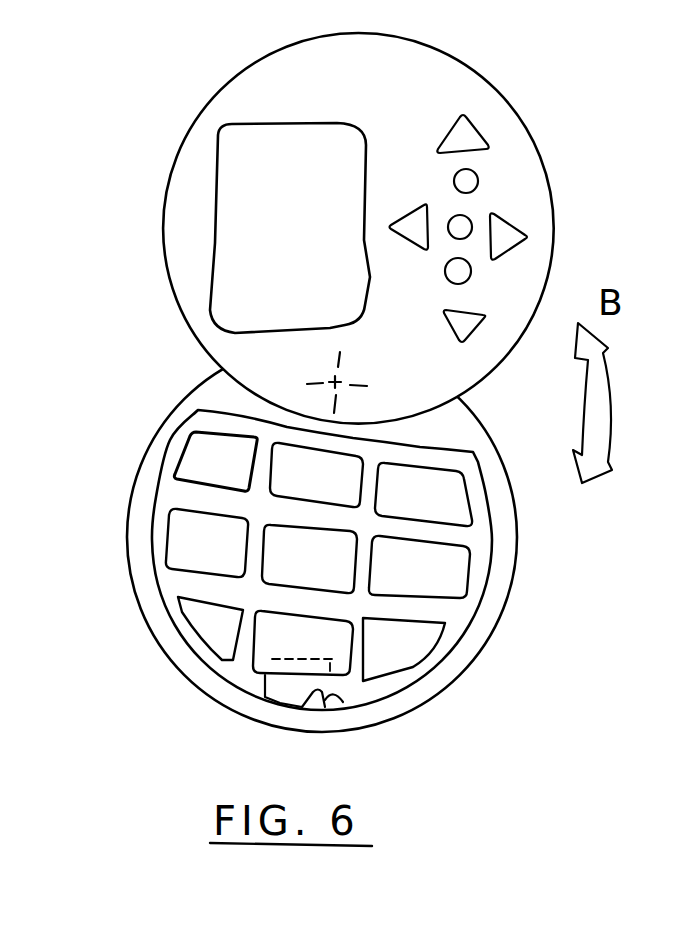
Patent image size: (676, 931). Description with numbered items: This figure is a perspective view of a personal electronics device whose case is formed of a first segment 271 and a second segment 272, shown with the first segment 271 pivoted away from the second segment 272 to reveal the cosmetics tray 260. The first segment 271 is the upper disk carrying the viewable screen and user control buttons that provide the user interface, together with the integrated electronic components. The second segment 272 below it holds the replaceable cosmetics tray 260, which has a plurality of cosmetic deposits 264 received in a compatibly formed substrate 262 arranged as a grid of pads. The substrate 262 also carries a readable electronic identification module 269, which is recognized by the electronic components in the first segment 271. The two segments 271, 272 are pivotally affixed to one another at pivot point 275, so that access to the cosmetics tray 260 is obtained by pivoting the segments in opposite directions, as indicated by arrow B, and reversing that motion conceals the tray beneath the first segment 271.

The replaceable cosmetics tray 260 is at (513, 557).
The substrate 262 is at (178, 503).
The cosmetic deposits 264 is at (210, 450).
The readable electronic identification module 269 is at (333, 703).
The first segment 271 is at (168, 177).
The second segment 272 is at (127, 528).
The pivot point 275 is at (335, 382).